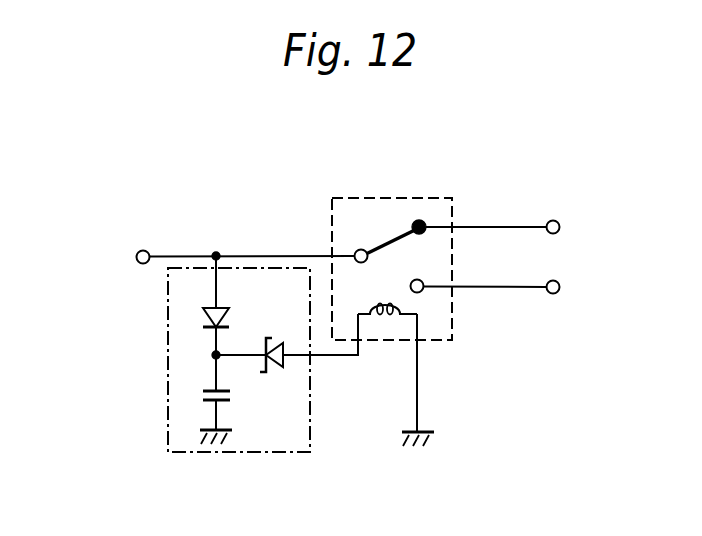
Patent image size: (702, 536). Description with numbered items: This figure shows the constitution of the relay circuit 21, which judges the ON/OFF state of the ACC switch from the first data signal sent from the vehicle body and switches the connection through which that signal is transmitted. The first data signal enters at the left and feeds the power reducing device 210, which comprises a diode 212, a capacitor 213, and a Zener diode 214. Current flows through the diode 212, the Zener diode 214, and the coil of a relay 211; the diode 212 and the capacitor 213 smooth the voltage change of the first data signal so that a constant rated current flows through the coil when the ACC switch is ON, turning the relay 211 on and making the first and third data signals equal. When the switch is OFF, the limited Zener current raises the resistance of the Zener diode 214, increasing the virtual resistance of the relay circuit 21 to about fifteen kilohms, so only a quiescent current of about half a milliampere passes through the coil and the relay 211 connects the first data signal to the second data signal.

The relay circuit 21 is at (222, 148).
The power reducing device 210 is at (253, 452).
The relay 211 is at (452, 318).
The diode 212 is at (226, 306).
The capacitor 213 is at (202, 395).
The Zener diode 214 is at (277, 375).